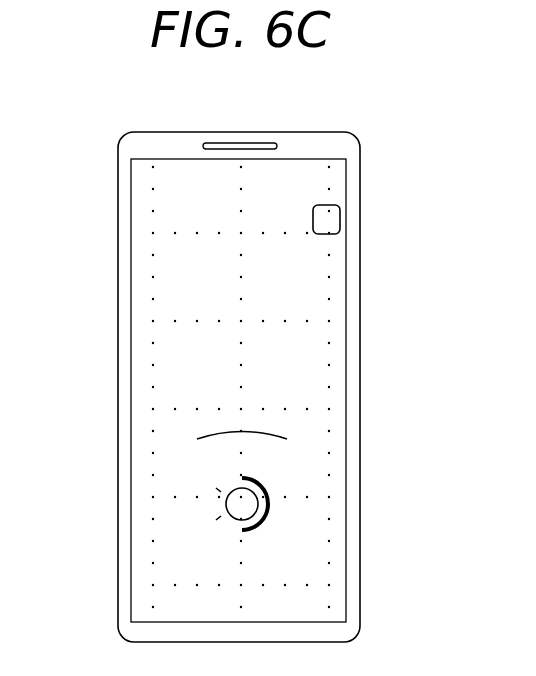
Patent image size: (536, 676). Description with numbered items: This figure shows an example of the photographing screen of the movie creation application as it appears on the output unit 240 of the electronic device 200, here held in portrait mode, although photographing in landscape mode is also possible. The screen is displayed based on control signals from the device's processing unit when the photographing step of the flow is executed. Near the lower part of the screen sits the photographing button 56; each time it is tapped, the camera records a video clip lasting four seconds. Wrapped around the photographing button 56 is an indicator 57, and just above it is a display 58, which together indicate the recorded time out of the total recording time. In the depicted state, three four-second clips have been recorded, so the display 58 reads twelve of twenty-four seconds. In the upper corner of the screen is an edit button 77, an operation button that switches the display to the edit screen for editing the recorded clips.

The electronic device 200 is at (306, 131).
The output unit 240 is at (340, 188).
The edit button 77 is at (333, 220).
The display 58 is at (242, 430).
The photographing button 56 is at (228, 504).
The indicator 57 is at (266, 498).